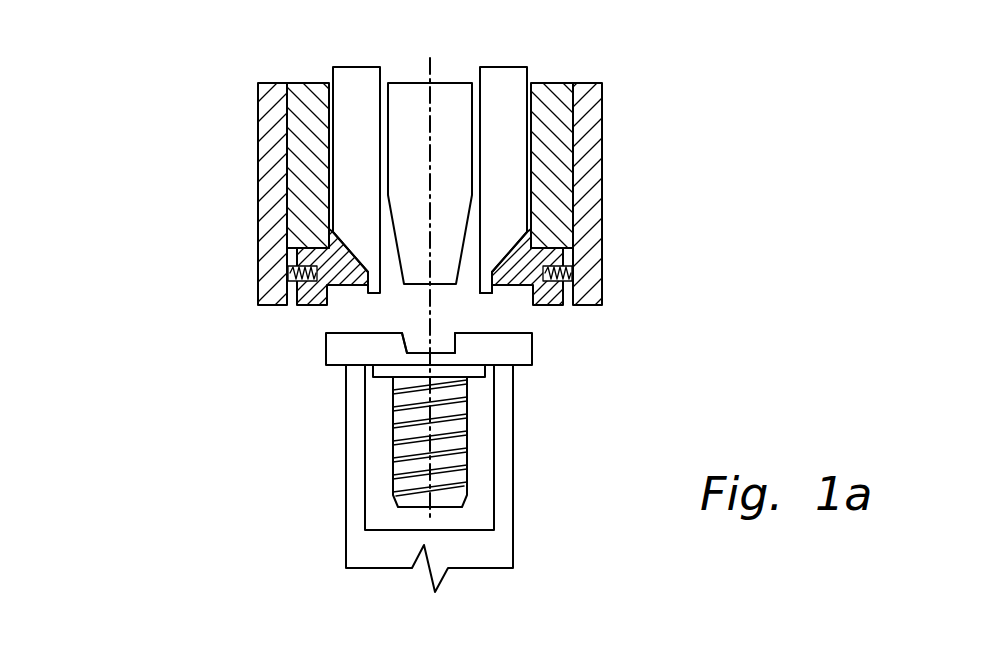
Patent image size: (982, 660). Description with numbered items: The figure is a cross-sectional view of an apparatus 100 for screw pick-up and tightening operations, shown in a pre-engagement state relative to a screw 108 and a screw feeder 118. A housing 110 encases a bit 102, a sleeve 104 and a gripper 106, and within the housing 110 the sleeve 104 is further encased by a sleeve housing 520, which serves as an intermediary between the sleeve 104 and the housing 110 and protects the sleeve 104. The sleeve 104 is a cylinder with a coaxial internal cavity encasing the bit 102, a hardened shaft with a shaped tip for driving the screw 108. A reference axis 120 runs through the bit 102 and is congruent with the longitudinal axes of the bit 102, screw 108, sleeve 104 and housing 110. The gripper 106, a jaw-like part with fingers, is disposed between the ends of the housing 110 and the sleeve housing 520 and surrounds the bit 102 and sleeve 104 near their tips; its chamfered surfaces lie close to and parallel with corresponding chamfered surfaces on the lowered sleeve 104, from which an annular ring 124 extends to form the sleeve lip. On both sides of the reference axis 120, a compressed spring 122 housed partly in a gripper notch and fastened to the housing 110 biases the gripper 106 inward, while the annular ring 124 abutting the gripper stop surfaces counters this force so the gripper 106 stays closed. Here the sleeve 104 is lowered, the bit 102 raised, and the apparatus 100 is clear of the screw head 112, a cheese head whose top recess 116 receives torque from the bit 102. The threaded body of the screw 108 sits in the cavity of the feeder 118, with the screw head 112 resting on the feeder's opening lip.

The apparatus 100 is at (192, 70).
The bit 102 is at (404, 95).
The sleeve 104 is at (508, 80).
The gripper 106 is at (306, 302).
The screw 108 is at (381, 416).
The housing 110 is at (258, 131).
The screw head 112 is at (343, 348).
The recess 116 is at (448, 350).
The screw feeder 118 is at (493, 549).
The reference axis 120 is at (442, 98).
The spring 122 is at (567, 270).
The annular ring 124 is at (483, 293).
The sleeve housing 520 is at (552, 145).